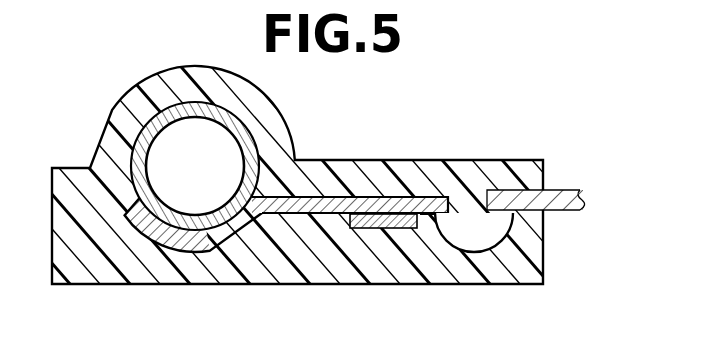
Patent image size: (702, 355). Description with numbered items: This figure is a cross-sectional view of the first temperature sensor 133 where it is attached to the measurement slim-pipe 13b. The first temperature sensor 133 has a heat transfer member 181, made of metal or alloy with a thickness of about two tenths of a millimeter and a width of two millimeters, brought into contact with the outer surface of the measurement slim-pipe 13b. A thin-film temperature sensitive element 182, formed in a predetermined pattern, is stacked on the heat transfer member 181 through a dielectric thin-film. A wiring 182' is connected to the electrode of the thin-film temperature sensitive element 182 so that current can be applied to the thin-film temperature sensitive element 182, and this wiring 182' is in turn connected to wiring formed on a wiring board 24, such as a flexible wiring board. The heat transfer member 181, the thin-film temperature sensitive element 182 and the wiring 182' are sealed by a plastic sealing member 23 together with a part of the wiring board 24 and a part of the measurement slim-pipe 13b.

The first temperature sensor 133 is at (388, 134).
The measurement slim-pipe 13b is at (245, 128).
The plastic sealing member 23 is at (460, 168).
The wiring board 24 is at (562, 192).
The heat transfer member 181 is at (220, 243).
The thin-film temperature sensitive element 182 is at (350, 262).
The wiring 182' is at (480, 270).